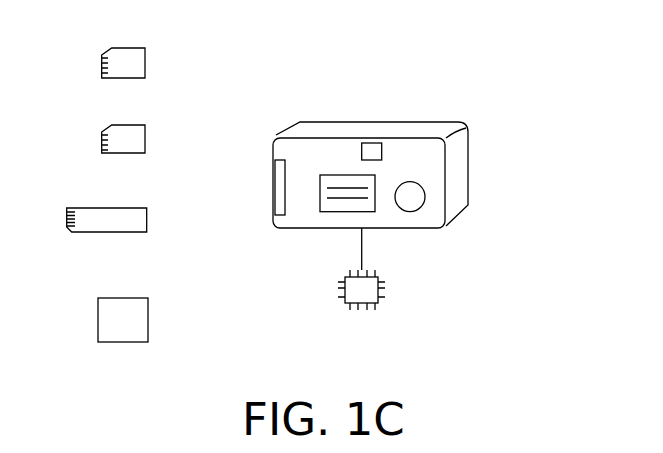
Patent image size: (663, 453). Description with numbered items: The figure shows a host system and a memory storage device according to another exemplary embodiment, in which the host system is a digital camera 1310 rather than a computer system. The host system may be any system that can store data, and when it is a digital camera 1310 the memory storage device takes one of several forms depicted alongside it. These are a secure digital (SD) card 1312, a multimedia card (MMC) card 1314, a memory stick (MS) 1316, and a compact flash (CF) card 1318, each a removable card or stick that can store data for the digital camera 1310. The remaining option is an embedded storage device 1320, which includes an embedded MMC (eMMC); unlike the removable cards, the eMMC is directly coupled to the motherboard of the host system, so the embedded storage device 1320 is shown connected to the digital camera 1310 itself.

The digital camera 1310 is at (468, 162).
The secure digital (SD) card 1312 is at (145, 53).
The multimedia card (MMC) card 1314 is at (145, 128).
The memory stick (MS) 1316 is at (147, 218).
The compact flash (CF) card 1318 is at (148, 312).
The embedded storage device 1320 is at (380, 288).